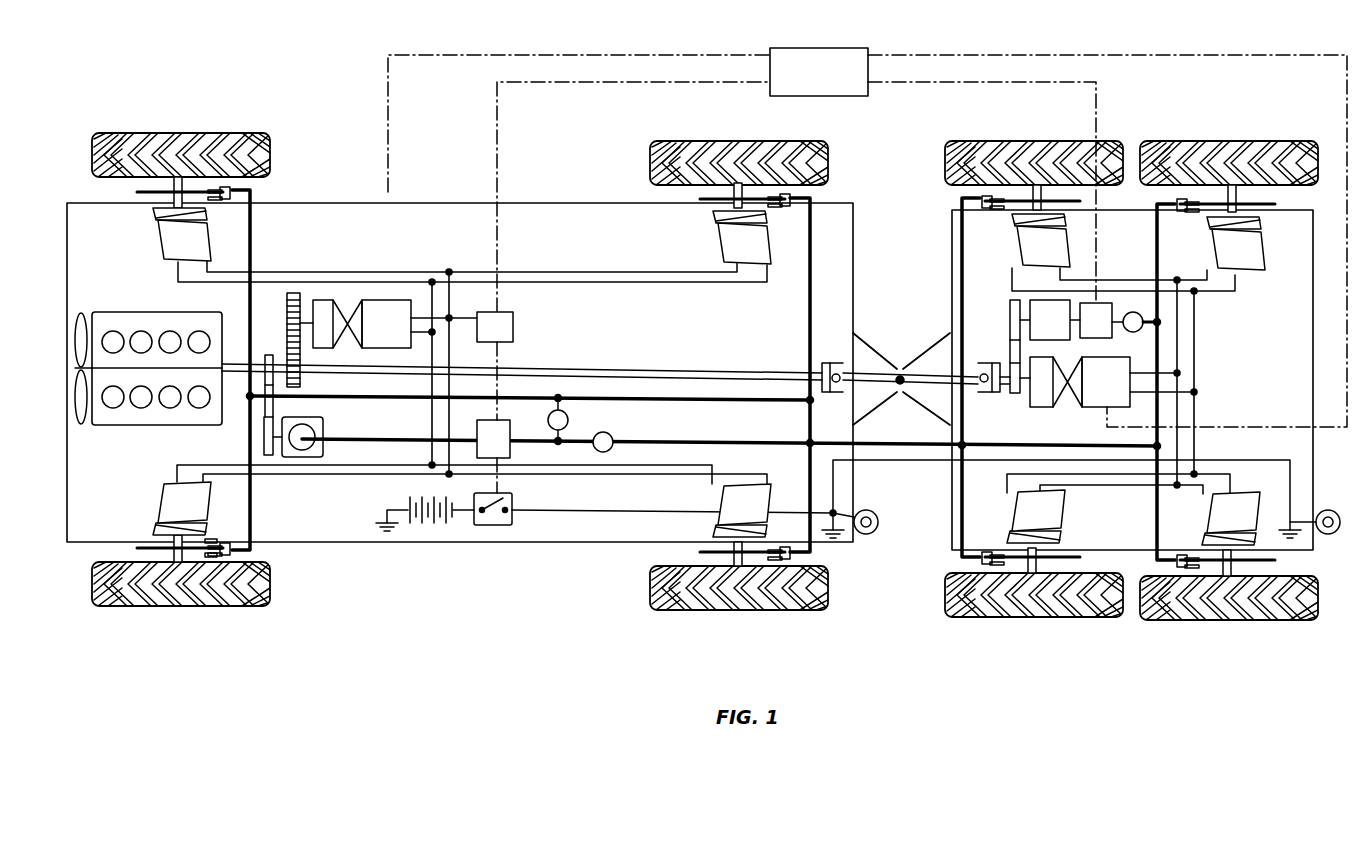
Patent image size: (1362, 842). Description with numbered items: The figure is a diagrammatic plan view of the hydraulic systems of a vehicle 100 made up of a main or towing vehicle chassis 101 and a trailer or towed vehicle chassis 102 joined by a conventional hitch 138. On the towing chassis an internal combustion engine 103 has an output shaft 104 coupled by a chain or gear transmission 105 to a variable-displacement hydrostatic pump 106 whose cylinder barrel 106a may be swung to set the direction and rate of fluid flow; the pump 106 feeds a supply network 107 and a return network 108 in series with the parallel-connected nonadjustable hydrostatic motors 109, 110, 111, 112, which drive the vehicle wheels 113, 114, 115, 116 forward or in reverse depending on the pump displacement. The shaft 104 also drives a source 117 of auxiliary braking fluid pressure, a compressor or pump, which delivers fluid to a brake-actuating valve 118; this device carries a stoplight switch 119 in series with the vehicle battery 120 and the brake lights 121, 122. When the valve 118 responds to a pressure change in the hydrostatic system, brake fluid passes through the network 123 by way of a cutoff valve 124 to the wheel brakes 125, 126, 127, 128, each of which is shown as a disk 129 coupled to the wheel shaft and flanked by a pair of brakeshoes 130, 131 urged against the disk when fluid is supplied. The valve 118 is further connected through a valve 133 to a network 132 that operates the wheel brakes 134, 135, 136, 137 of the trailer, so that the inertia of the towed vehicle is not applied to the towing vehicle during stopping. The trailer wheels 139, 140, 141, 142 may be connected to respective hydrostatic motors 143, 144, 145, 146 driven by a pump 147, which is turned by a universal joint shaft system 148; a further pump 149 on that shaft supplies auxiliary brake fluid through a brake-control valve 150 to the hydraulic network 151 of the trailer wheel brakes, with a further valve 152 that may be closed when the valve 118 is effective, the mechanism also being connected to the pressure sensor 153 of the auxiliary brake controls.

The vehicle 100 is at (360, 178).
The main vehicle chassis 101 is at (512, 542).
The trailer chassis 102 is at (952, 260).
The internal combustion engine 103 is at (115, 312).
The output shaft 104 is at (648, 372).
The chain or gear transmission 105 is at (287, 304).
The variable-displacement hydrostatic pump 106 is at (336, 300).
The cylinder barrel 106a is at (380, 300).
The supply network 107 is at (432, 290).
The return network 108 is at (449, 298).
The hydrostatic motor 109 is at (160, 240).
The hydrostatic motor 110 is at (716, 242).
The hydrostatic motor 111 is at (158, 498).
The hydrostatic motor 112 is at (716, 498).
The vehicle wheel 113 is at (175, 133).
The vehicle wheel 114 is at (705, 141).
The vehicle wheel 115 is at (178, 606).
The vehicle wheel 116 is at (740, 610).
The source of auxiliary braking fluid pressure 117 is at (323, 424).
The brake-actuating valve 118 is at (510, 450).
The stoplight switch 119 is at (512, 518).
The vehicle battery 120 is at (424, 527).
The brake light 121 is at (875, 520).
The brake light 122 is at (1336, 512).
The network 123 is at (665, 400).
The cutoff valve 124 is at (570, 418).
The wheel brake 125 is at (232, 186).
The wheel brake 126 is at (790, 197).
The wheel brake 127 is at (232, 551).
The wheel brake 128 is at (792, 560).
The disk 129 is at (140, 548).
The brakeshoe 130 is at (226, 542).
The brakeshoe 131 is at (212, 557).
The network 132 is at (730, 418).
The valve 133 is at (612, 448).
The wheel brake 134 is at (978, 197).
The wheel brake 135 is at (1178, 210).
The wheel brake 136 is at (982, 562).
The wheel brake 137 is at (1174, 554).
The hitch 138 is at (900, 392).
The trailer wheel 139 is at (1040, 141).
The trailer wheel 140 is at (1236, 141).
The trailer wheel 141 is at (1042, 618).
The trailer wheel 142 is at (1234, 620).
The hydrostatic motor 143 is at (1012, 244).
The hydrostatic motor 144 is at (1244, 252).
The hydrostatic motor 145 is at (1060, 505).
The hydrostatic motor 146 is at (1246, 512).
The pump 147 is at (1090, 407).
The universal joint shaft system 148 is at (892, 376).
The pump 149 is at (1010, 312).
The brake-control valve 150 is at (1105, 338).
The hydraulic network 151 is at (1157, 402).
The valve / transmission-actuating mechanism 152 is at (822, 48).
The pressure sensor 153 is at (513, 326).